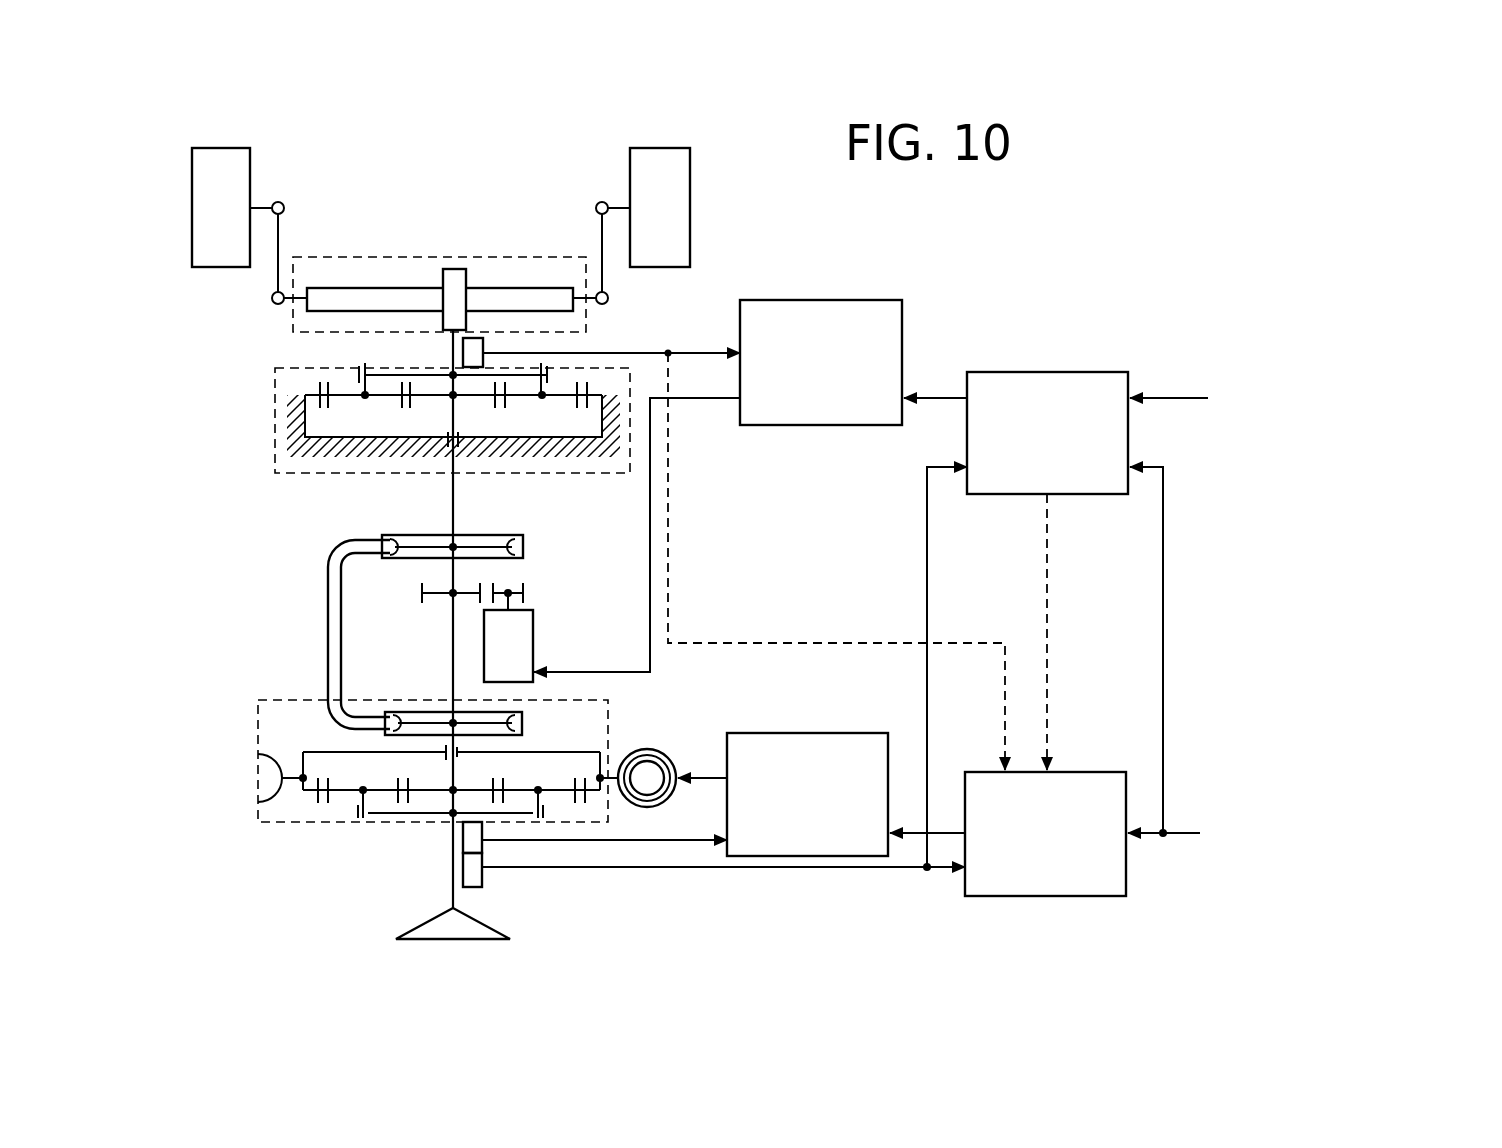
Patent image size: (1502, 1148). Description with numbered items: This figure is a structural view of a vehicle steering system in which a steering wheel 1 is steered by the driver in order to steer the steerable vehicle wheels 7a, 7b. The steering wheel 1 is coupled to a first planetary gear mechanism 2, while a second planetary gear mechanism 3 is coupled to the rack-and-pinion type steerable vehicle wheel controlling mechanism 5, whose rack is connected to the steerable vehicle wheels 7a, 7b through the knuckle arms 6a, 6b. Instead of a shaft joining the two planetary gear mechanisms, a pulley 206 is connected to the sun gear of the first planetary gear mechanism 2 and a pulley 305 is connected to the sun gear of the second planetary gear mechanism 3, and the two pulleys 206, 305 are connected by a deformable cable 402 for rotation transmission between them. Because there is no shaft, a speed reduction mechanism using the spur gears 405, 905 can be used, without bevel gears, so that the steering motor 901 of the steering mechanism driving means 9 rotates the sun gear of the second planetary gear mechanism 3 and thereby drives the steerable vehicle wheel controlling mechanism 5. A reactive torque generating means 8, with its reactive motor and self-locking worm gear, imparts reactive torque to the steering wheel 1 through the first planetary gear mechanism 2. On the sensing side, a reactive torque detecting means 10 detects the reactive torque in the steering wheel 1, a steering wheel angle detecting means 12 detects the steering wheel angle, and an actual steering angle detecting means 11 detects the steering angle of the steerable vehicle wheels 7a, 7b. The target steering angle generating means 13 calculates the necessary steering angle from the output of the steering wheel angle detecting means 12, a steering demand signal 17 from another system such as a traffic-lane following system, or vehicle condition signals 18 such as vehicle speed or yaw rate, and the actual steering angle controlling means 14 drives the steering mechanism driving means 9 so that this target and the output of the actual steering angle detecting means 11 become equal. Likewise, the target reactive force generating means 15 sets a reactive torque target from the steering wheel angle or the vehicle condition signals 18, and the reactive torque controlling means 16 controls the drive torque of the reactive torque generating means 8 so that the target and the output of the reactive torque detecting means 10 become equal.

The steering wheel 1 is at (411, 930).
The first planetary gear mechanism 2 is at (261, 752).
The second planetary gear mechanism 3 is at (275, 441).
The steerable vehicle wheel controlling mechanism 5 is at (293, 327).
The knuckle arm 6a is at (278, 202).
The knuckle arm 6b is at (601, 202).
The steerable vehicle wheel 7a is at (222, 148).
The steerable vehicle wheel 7b is at (647, 148).
The reactive torque generating means 8 is at (670, 797).
The steering mechanism driving means 9 is at (555, 622).
The reactive torque detecting means 10 is at (482, 845).
The actual steering angle detecting means 11 is at (483, 343).
The steering wheel angle detecting means 12 is at (482, 875).
The target steering angle generating means 13 is at (1107, 370).
The actual steering angle controlling means 14 is at (877, 300).
The target reactive force generating means 15 is at (1104, 770).
The reactive torque controlling means 16 is at (864, 731).
The steering demand signal 17 is at (1322, 370).
The vehicle condition signals 18 is at (1319, 792).
The pulley 206 is at (405, 712).
The pulley 305 is at (416, 535).
The deformable cable 402 is at (328, 633).
The spur gear 405 is at (436, 598).
The steering motor 901 is at (523, 645).
The spur gear 905 is at (525, 590).